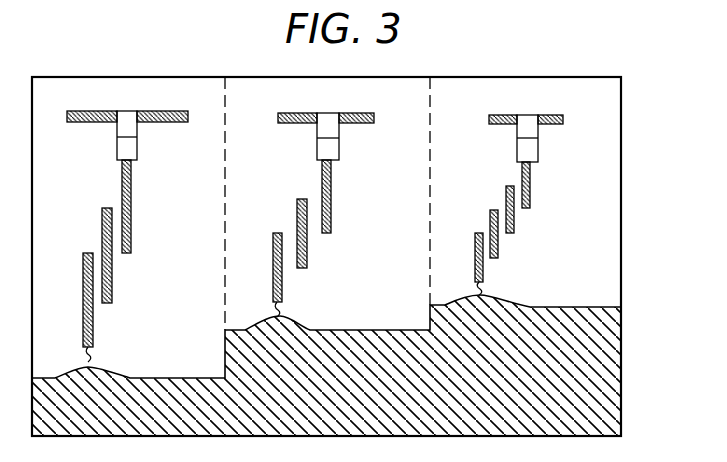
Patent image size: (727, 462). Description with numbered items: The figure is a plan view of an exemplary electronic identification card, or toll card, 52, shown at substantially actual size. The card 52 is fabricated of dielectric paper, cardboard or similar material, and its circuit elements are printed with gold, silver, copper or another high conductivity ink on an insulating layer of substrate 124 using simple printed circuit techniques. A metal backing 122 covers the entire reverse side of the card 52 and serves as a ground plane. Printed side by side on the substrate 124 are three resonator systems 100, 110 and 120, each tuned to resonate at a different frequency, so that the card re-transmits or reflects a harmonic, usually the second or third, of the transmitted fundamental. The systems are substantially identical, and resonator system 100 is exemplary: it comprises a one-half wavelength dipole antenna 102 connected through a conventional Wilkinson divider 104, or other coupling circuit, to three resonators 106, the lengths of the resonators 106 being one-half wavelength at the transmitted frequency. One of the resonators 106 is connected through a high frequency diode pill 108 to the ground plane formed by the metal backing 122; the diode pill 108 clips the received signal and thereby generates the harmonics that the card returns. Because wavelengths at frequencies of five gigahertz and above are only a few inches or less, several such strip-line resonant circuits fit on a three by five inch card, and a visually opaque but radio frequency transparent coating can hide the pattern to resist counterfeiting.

The electronic identification card 52 is at (405, 77).
The resonator system 100 is at (140, 224).
The one-half wavelength dipole antenna 102 is at (98, 111).
The Wilkinson divider 104 is at (137, 152).
The resonators 106 is at (131, 233).
The high frequency diode pill 108 is at (92, 348).
The resonator system 110 is at (365, 175).
The resonator system 120 is at (552, 173).
The metal backing 122 is at (595, 357).
The substrate 124 is at (490, 95).